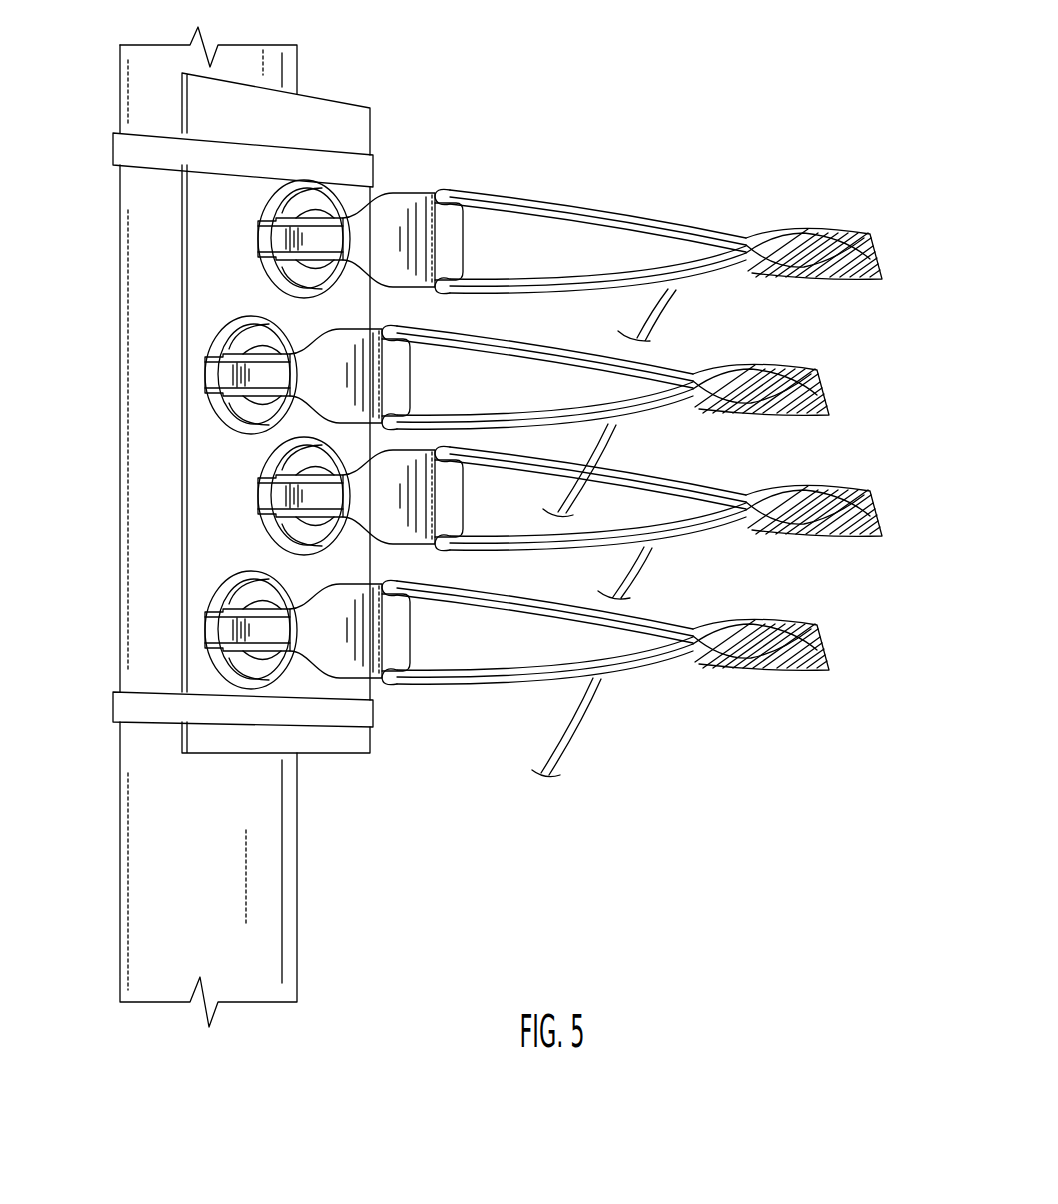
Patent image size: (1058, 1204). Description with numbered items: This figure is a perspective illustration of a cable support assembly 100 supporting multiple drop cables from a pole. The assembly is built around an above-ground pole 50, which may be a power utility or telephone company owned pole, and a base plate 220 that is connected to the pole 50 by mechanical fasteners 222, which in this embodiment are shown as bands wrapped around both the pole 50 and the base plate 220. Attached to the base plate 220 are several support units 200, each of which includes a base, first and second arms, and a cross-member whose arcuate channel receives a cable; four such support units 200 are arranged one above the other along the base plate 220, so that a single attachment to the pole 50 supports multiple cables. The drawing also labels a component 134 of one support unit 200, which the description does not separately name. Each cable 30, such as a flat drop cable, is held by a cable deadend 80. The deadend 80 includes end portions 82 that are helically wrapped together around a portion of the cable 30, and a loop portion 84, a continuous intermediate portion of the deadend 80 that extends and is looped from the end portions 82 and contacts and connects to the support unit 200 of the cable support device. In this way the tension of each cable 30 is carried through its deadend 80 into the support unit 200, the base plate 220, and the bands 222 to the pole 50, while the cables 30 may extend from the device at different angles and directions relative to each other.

The cable 30 is at (602, 730).
The above-ground pole 50 is at (100, 275).
The cable deadend 80 is at (637, 467).
The end portions 82 is at (814, 229).
The loop portion 84 is at (590, 197).
The cable support assembly 100 is at (492, 85).
The bolt 134 is at (213, 375).
The support unit 200 is at (261, 434).
The base plate 220 is at (337, 115).
The mechanical fasteners 222 is at (91, 148).